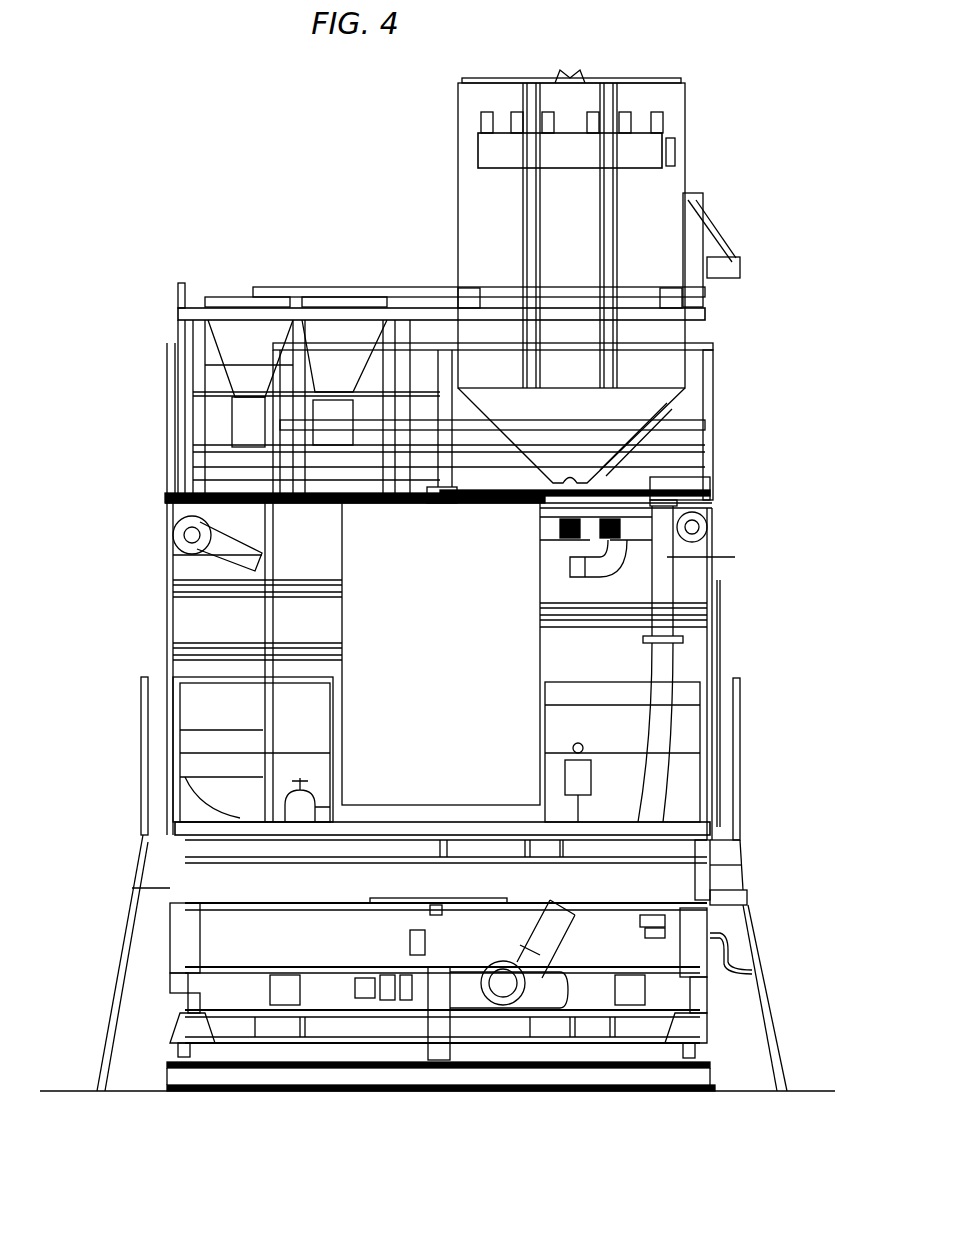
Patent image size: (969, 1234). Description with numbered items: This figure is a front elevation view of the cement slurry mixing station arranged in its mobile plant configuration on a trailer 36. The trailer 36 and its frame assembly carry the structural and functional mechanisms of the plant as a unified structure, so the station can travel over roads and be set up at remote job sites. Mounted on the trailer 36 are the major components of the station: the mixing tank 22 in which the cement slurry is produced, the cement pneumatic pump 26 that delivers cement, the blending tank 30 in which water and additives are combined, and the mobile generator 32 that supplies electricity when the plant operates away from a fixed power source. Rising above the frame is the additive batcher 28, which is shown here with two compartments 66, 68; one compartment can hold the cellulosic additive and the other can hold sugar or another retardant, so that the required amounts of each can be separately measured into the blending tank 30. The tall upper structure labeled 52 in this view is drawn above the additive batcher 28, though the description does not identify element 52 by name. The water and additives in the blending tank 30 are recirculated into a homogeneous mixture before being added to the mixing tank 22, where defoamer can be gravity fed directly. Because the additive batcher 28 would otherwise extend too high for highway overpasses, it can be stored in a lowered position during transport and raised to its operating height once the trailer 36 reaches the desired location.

The mixing tank 22 is at (708, 595).
The cement pneumatic pump 26 is at (665, 557).
The additive batcher 28 is at (216, 283).
The blending tank 30 is at (225, 795).
The mobile generator 32 is at (363, 538).
The trailer 36 is at (745, 847).
The tower 52 is at (620, 87).
The compartment 66 is at (238, 300).
The compartment 68 is at (332, 300).